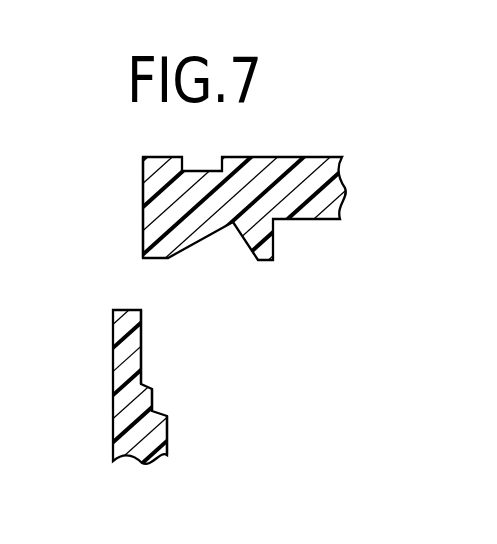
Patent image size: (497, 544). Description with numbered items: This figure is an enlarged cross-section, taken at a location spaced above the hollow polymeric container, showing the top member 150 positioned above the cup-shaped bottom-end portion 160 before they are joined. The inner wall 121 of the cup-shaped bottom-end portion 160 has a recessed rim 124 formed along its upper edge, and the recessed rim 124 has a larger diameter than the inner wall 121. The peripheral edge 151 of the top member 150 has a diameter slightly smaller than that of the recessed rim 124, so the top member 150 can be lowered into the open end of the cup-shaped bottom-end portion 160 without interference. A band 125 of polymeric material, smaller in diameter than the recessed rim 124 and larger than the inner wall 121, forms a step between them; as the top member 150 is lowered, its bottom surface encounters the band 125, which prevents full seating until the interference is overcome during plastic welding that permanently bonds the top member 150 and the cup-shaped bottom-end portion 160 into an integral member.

The top member 150 is at (356, 207).
The peripheral edge 151 is at (142, 205).
The cup-shaped bottom-end portion 160 is at (94, 382).
The recessed rim 124 is at (142, 362).
The band 125 is at (153, 397).
The inner wall 121 is at (168, 435).